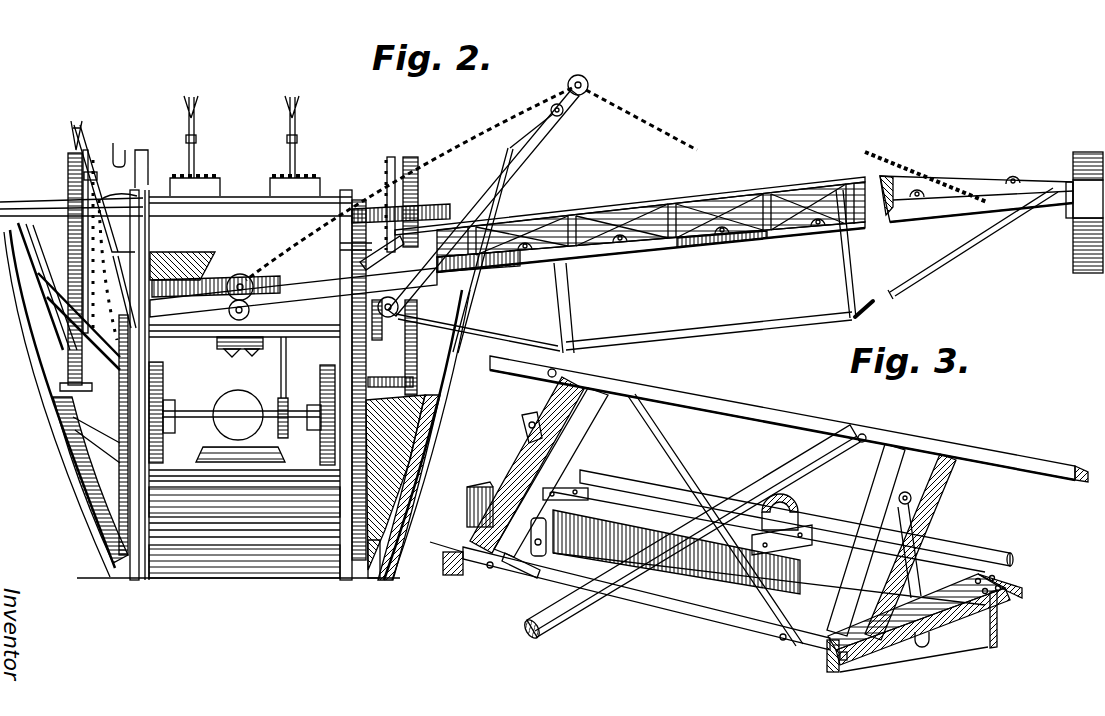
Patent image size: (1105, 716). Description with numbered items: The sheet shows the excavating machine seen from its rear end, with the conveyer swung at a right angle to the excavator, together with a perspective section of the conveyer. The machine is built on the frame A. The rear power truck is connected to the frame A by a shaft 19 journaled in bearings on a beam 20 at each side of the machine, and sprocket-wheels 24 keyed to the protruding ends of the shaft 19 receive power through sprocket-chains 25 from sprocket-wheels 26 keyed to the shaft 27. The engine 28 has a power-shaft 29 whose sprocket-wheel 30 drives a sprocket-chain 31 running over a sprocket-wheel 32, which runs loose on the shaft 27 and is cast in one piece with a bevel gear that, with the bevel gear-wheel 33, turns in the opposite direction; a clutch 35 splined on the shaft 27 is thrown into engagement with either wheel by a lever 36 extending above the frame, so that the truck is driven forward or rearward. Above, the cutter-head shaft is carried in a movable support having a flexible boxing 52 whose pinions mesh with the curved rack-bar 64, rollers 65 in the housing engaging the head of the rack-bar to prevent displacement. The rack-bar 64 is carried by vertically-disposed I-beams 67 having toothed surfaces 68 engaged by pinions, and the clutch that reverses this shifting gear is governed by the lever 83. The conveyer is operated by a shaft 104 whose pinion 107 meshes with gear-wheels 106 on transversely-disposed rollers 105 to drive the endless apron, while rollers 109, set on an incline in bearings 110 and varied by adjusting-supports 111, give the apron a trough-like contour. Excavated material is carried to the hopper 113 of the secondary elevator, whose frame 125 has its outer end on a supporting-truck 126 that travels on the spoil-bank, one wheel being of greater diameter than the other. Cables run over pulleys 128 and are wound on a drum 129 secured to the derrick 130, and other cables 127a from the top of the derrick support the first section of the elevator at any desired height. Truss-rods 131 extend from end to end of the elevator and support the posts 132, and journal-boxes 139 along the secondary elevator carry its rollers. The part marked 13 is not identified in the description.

In FIG. 2, the hook 13 is at (118, 144).
In FIG. 2, the shaft 19 is at (136, 182).
In FIG. 2, the beam 20 is at (244, 532).
In FIG. 2, the sprocket-wheels 24 is at (117, 537).
In FIG. 2, the sprocket-chains 25 is at (127, 420).
In FIG. 2, the sprocket-wheels 26 is at (153, 338).
In FIG. 2, the shaft 27 is at (293, 338).
In FIG. 2, the engine 28 is at (241, 426).
In FIG. 2, the power-shaft 29 is at (197, 410).
In FIG. 2, the sprocket-wheel 30 is at (288, 402).
In FIG. 2, the sprocket-chain 31 is at (283, 396).
In FIG. 2, the sprocket-wheel 32 is at (252, 352).
In FIG. 2, the bevel gear-wheel 33 is at (230, 352).
In FIG. 2, the clutch 35 is at (247, 330).
In FIG. 2, the lever 36 is at (71, 146).
In FIG. 2, the flexible boxing 52 is at (360, 202).
In FIG. 2, the curved rack-bar 64 is at (85, 152).
In FIG. 2, the rollers 65 is at (296, 160).
In FIG. 2, the I-beams 67 is at (75, 343).
In FIG. 2, the toothed surfaces 68 is at (68, 181).
In FIG. 2, the lever 83 is at (196, 160).
In FIG. 3, the shaft 104 is at (983, 547).
In FIG. 3, the rollers 105 is at (665, 592).
In FIG. 3, the gear-wheels 106 is at (807, 513).
In FIG. 3, the pinion 107 is at (797, 500).
In FIG. 2, the rollers 109 is at (670, 240).
In FIG. 3, the rollers 109 is at (584, 437).
In FIG. 3, the bearings 110 is at (917, 440).
In FIG. 3, the adjusting-supports 111 is at (930, 530).
In FIG. 2, the hopper 113 is at (234, 285).
In FIG. 2, the secondary-elevator frame 125 is at (780, 240).
In FIG. 2, the supporting-truck 126 is at (1070, 206).
In FIG. 2, the cables 127a is at (927, 176).
In FIG. 2, the pulleys 128 is at (578, 76).
In FIG. 2, the drum 129 is at (560, 114).
In FIG. 2, the derrick 130 is at (521, 162).
In FIG. 2, the truss-rods 131 is at (698, 329).
In FIG. 2, the posts 132 is at (572, 313).
In FIG. 2, the journal-boxes 139 is at (531, 247).
In FIG. 2, the frame A is at (42, 313).